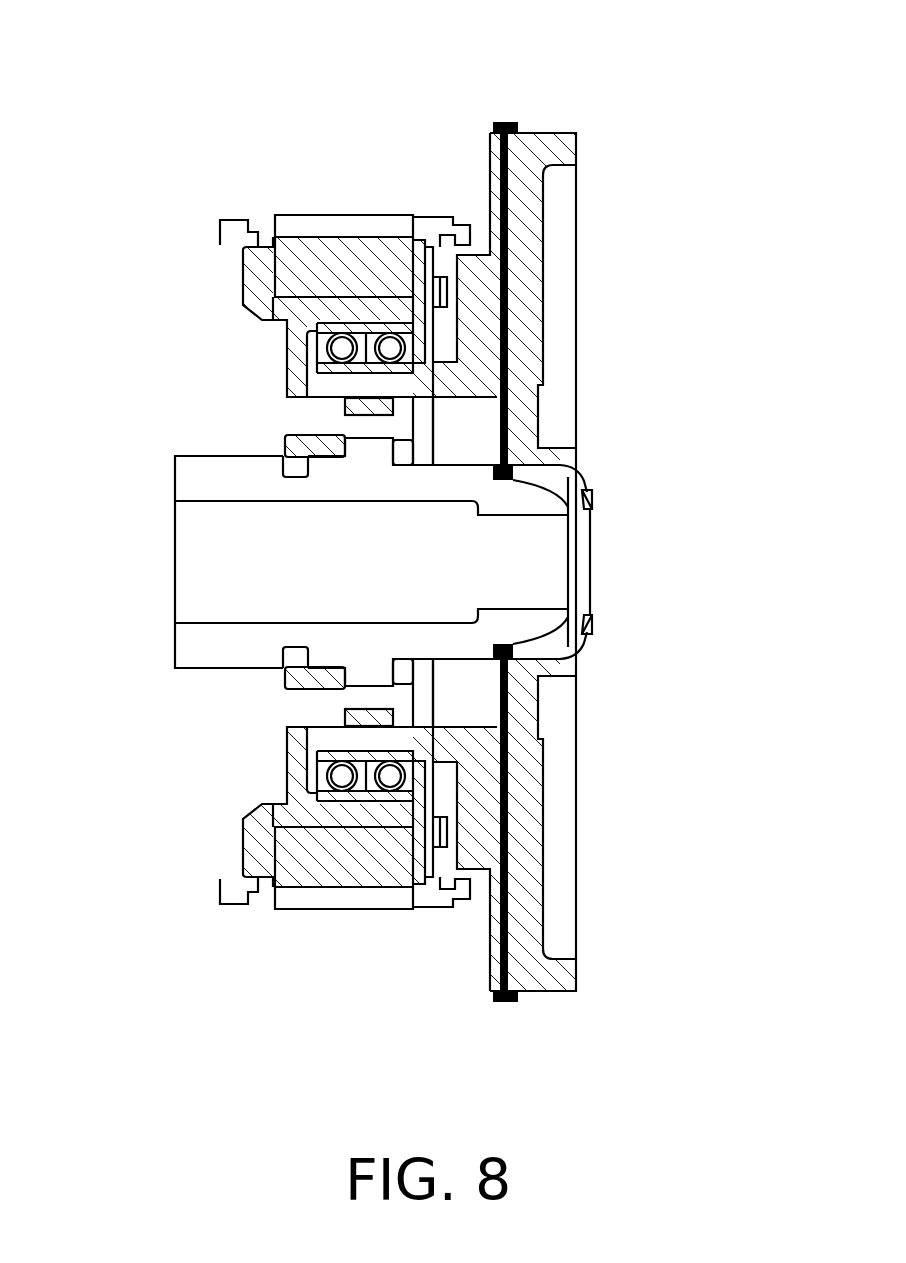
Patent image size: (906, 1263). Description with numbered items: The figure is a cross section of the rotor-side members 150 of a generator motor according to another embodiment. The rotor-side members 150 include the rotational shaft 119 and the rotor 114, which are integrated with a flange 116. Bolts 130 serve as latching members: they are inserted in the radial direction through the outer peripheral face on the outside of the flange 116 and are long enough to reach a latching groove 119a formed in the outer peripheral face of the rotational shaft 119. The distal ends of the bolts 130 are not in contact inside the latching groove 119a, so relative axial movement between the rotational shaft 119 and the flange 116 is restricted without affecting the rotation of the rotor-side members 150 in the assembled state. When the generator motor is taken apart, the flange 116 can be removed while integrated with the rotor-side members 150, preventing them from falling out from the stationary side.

The rotor-side members 150 is at (202, 163).
The rotor 114 is at (324, 208).
The flange 116 is at (596, 108).
The rotational shaft 119 is at (187, 446).
The latching groove 119a is at (585, 502).
The bolts 130 is at (500, 177).